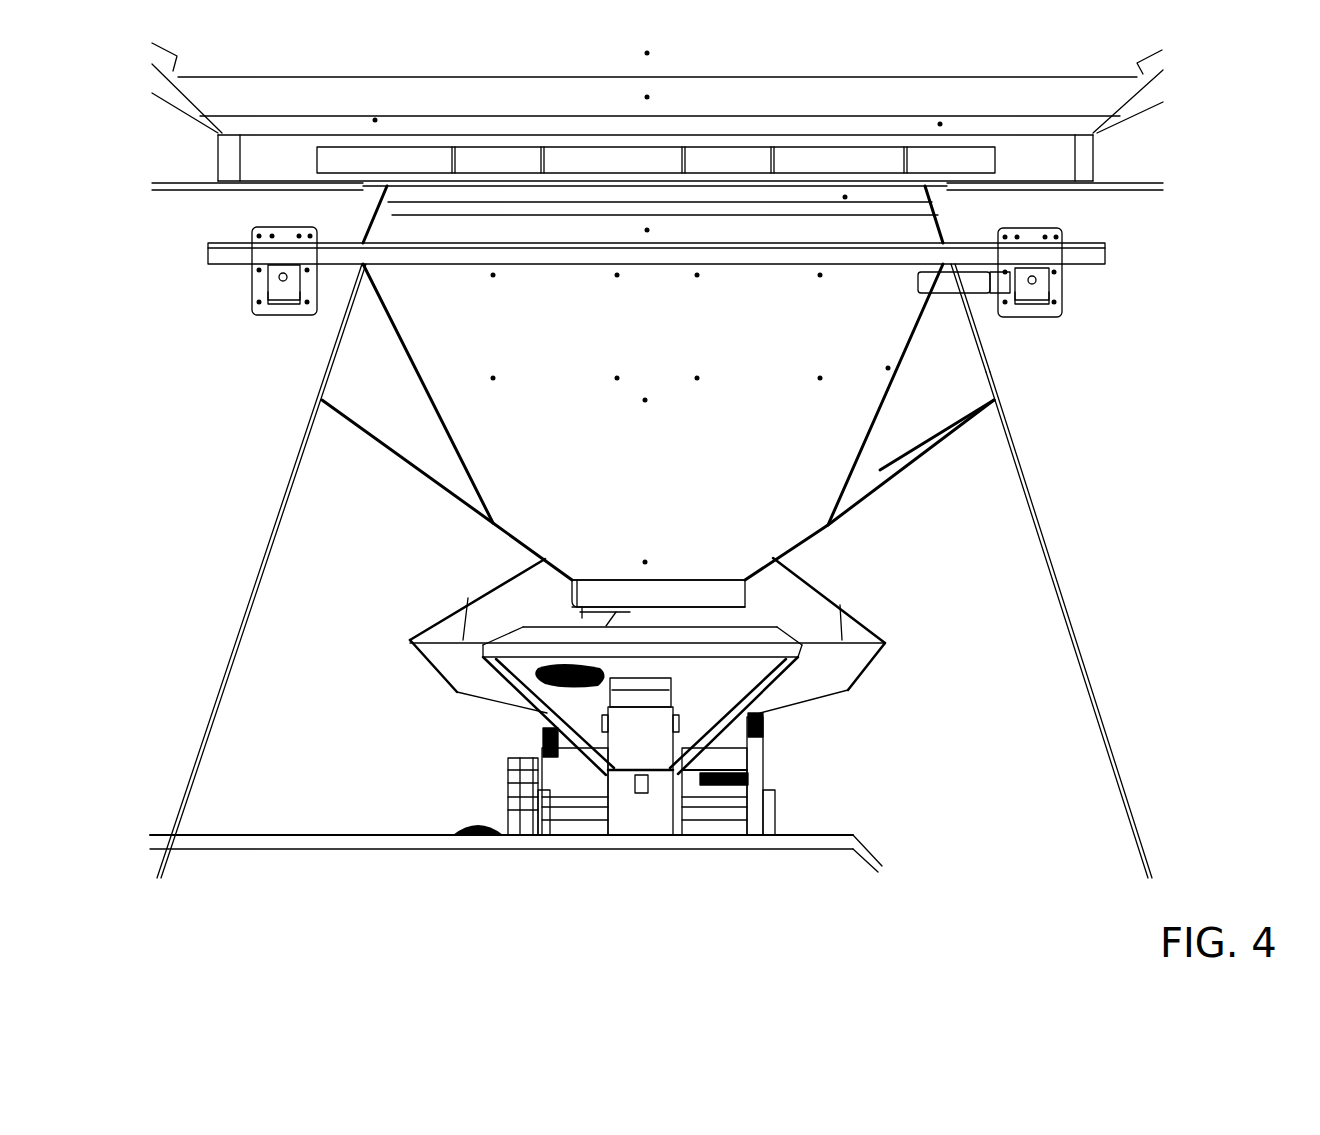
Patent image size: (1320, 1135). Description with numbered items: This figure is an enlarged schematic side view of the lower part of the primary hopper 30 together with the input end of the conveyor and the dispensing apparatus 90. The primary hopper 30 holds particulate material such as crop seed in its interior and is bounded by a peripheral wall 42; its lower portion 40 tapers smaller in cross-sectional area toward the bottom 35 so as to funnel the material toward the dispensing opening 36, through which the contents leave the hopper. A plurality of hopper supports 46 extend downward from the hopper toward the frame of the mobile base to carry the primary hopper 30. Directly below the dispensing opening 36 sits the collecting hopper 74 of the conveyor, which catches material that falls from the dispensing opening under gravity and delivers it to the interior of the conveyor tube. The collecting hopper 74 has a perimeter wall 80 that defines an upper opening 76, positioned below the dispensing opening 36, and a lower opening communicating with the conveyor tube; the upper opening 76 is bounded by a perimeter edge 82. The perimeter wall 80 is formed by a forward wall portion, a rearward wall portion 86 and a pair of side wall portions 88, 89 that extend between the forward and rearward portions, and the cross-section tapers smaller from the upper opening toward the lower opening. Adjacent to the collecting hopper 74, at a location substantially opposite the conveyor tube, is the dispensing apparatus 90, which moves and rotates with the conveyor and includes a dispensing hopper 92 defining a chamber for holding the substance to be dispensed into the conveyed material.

The primary hopper 30 is at (353, 444).
The bottom 35 is at (555, 590).
The dispensing opening 36 is at (582, 618).
The lower portion 40 is at (917, 478).
The peripheral wall 42 is at (937, 445).
The hopper supports 46 is at (209, 749).
The collecting hopper 74 is at (895, 647).
The upper opening 76 is at (790, 563).
The perimeter wall 80 is at (825, 673).
The perimeter edge 82 is at (517, 570).
The rearward wall portion 86 is at (463, 663).
The side wall portion 88 is at (417, 647).
The side wall portion 89 is at (864, 680).
The dispensing apparatus 90 is at (530, 730).
The dispensing hopper 92 is at (693, 698).